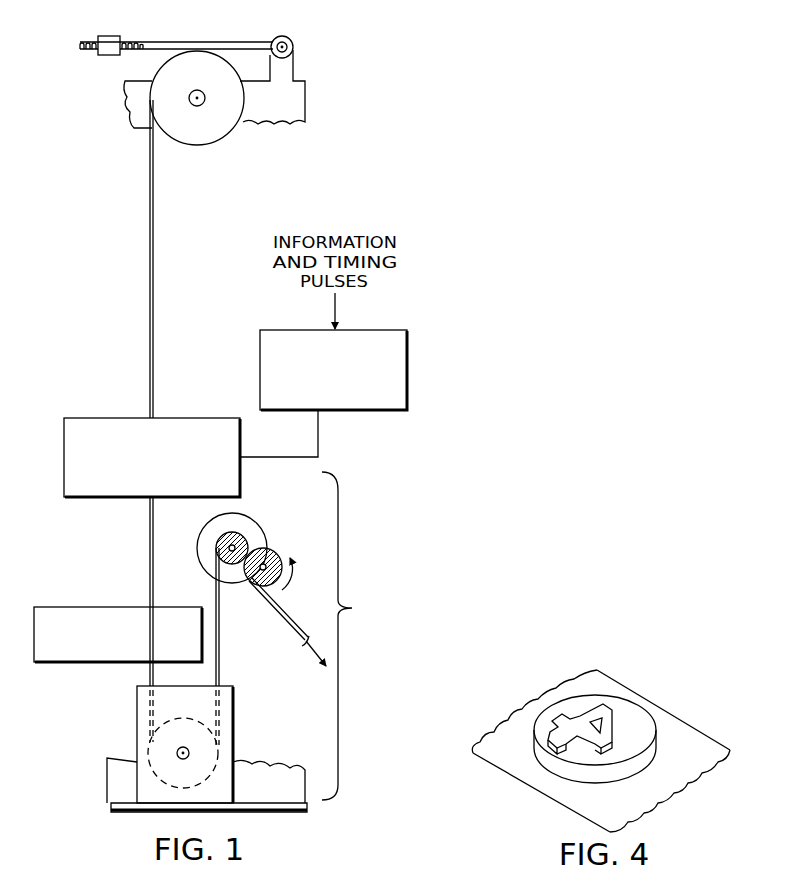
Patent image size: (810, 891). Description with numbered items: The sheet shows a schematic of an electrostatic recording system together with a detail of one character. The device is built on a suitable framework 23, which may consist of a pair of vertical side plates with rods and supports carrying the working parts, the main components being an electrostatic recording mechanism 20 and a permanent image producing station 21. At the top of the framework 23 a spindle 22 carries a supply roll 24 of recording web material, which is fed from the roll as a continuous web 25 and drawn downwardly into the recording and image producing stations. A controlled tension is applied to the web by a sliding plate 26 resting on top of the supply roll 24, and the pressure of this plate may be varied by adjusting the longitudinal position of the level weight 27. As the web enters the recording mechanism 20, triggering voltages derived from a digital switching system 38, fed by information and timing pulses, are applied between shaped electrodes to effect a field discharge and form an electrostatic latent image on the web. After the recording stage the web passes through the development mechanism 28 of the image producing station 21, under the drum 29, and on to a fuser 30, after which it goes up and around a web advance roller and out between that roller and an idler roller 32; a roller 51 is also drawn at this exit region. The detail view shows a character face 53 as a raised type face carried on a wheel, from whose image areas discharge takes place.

In FIG. 1, the electrostatic recording mechanism 20 is at (100, 417).
In FIG. 1, the permanent image producing station 21 is at (352, 608).
In FIG. 1, the spindle 22 is at (203, 104).
In FIG. 1, the framework 23 is at (303, 110).
In FIG. 1, the supply roll 24 is at (222, 134).
In FIG. 1, the continuous web 25 is at (154, 232).
In FIG. 1, the sliding plate 26 is at (172, 41).
In FIG. 1, the level weight 27 is at (108, 36).
In FIG. 1, the development mechanism 28 is at (40, 663).
In FIG. 1, the drum 29 is at (158, 750).
In FIG. 1, the fuser 30 is at (234, 703).
In FIG. 1, the idler roller 32 is at (272, 553).
In FIG. 1, the digital switching system 38 is at (385, 411).
In FIG. 1, the transfer roller 51 is at (257, 527).
In FIG. 4, the character face 53 is at (605, 712).